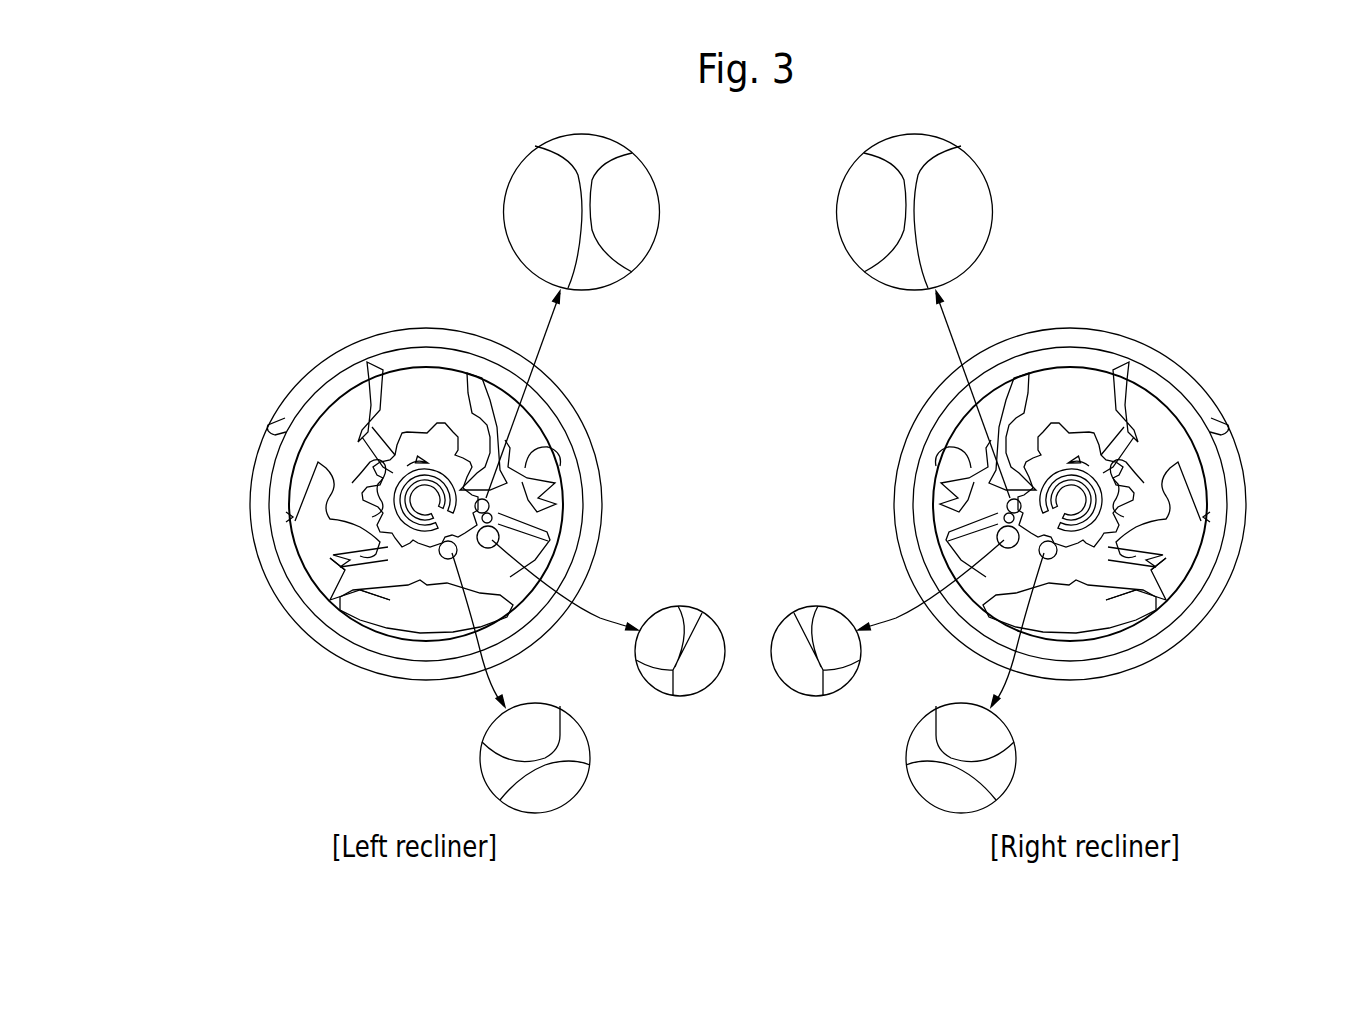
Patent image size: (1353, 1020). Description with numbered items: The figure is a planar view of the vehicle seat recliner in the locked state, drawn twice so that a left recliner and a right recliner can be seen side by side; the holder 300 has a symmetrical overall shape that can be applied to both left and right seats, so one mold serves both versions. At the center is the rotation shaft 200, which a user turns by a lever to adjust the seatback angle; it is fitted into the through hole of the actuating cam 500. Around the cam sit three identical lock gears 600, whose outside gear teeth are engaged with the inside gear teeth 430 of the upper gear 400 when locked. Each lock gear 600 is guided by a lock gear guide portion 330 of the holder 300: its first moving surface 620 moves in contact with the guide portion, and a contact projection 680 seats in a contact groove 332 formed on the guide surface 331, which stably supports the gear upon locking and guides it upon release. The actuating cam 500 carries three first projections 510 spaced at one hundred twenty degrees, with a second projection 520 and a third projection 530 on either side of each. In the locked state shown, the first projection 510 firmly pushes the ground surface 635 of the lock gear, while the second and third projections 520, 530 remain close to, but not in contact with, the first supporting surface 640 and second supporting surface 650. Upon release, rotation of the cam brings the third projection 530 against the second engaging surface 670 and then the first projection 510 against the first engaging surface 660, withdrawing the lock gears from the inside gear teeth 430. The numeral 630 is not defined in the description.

The rotation shaft 200 is at (442, 470).
The holder 300 is at (562, 379).
The lock gear guide portion 330 is at (287, 421).
The guide surface 331 is at (322, 519).
The contact groove 332 is at (390, 455).
The upper gear 400 is at (550, 410).
The inside gear teeth 430 is at (557, 464).
The actuating cam 500 is at (483, 516).
The first projection 510 is at (492, 545).
The second projection 520 is at (483, 502).
The third projection 530 is at (447, 562).
The lock gear 600 is at (409, 380).
The first moving surface 620 is at (296, 519).
The cam lobe 630 is at (1156, 568).
The ground surface 635 is at (340, 568).
The first supporting surface 640 is at (385, 600).
The second supporting surface 650 is at (316, 464).
The first engaging surface 660 is at (388, 512).
The second engaging surface 670 is at (352, 488).
The contact projection 680 is at (375, 445).